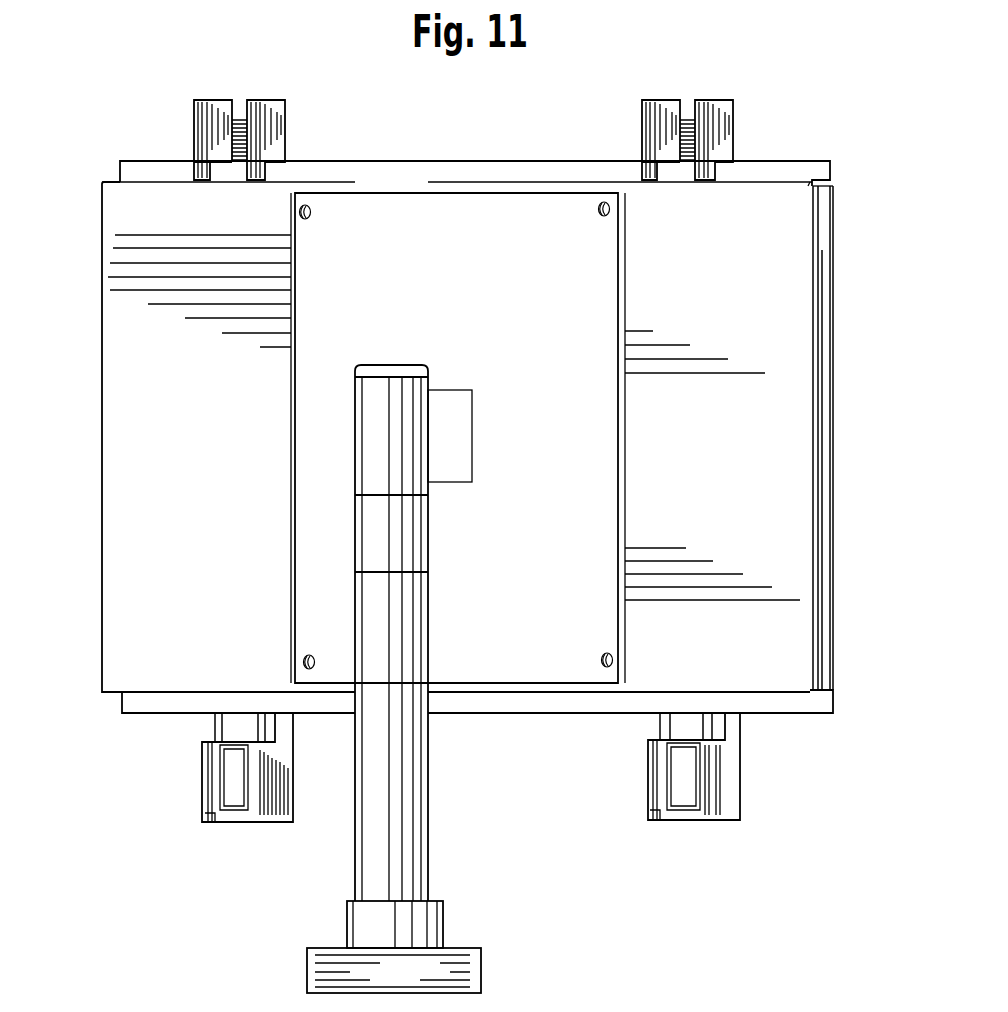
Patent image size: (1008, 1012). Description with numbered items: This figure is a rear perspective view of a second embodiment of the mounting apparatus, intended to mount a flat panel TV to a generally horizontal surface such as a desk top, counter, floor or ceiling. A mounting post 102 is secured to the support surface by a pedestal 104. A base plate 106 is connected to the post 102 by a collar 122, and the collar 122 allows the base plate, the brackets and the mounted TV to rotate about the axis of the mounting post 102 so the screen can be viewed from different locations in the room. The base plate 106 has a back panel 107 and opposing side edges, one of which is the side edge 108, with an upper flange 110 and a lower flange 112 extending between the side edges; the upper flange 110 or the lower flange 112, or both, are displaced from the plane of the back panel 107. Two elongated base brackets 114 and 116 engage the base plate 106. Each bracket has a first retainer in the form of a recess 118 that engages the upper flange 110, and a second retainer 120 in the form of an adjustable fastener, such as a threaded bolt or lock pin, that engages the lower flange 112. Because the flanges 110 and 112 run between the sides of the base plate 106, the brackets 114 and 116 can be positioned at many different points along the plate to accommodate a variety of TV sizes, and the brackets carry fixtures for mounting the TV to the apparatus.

The mounting post 102 is at (418, 822).
The pedestal 104 is at (102, 465).
The base plate 106 is at (783, 282).
The back panel 107 is at (742, 419).
The side edge 108 is at (832, 463).
The upper flange 110 is at (770, 163).
The lower flange 112 is at (797, 707).
The base bracket 114 is at (733, 782).
The base bracket 116 is at (265, 113).
The recess 118 is at (272, 173).
The lower left clamp 120 is at (215, 730).
The collar 122 is at (291, 437).